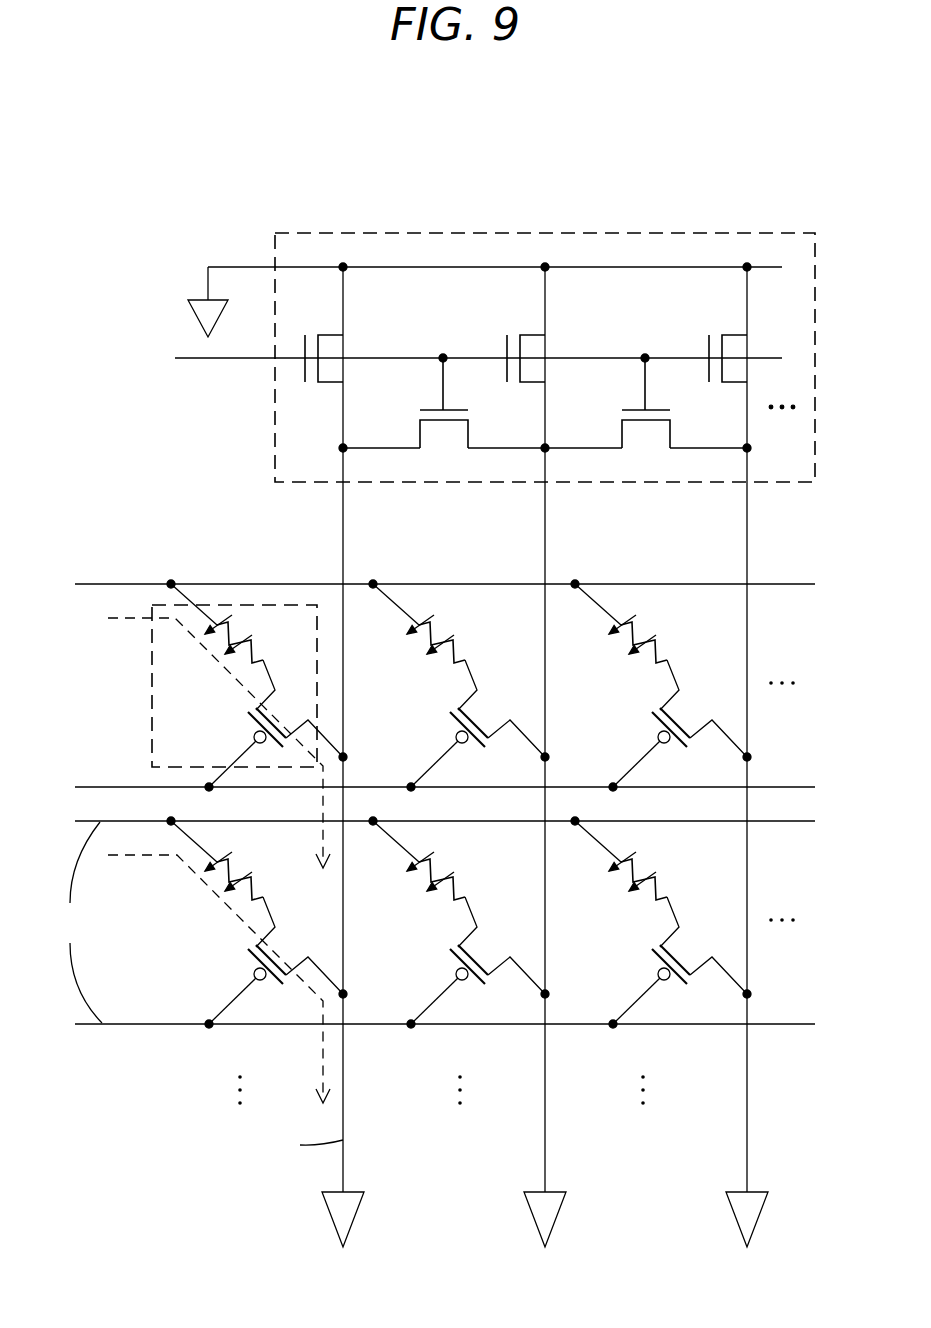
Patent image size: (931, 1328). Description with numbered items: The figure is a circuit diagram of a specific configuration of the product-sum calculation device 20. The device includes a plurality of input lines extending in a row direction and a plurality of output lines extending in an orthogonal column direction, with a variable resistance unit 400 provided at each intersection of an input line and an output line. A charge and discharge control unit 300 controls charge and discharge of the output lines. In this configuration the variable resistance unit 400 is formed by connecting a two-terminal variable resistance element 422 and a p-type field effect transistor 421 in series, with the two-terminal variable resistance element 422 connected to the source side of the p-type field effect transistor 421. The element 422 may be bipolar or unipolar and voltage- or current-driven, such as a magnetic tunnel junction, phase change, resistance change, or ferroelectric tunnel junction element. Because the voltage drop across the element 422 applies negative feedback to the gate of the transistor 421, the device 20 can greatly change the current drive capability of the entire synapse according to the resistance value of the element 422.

The product-sum calculation device 20 is at (613, 137).
The charge and discharge control unit 300 is at (653, 232).
The variable resistance unit 400 is at (152, 672).
The p-type field effect transistor 421 is at (252, 728).
The two-terminal variable resistance element 422 is at (233, 630).